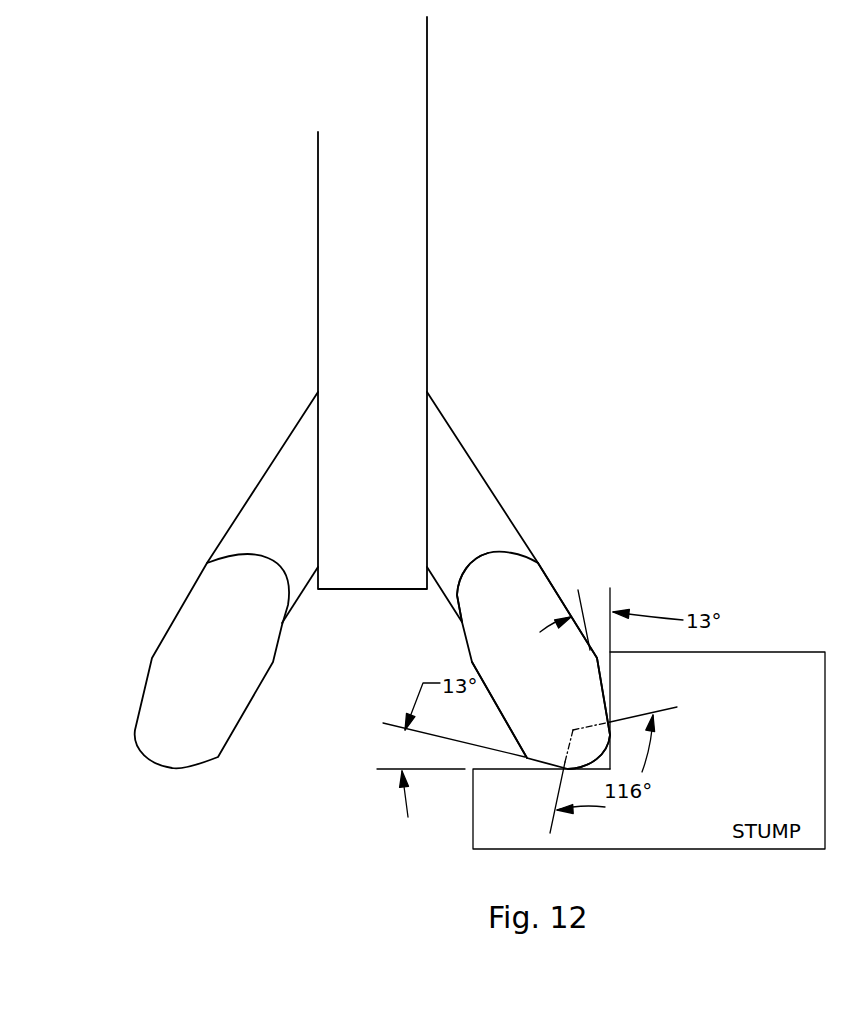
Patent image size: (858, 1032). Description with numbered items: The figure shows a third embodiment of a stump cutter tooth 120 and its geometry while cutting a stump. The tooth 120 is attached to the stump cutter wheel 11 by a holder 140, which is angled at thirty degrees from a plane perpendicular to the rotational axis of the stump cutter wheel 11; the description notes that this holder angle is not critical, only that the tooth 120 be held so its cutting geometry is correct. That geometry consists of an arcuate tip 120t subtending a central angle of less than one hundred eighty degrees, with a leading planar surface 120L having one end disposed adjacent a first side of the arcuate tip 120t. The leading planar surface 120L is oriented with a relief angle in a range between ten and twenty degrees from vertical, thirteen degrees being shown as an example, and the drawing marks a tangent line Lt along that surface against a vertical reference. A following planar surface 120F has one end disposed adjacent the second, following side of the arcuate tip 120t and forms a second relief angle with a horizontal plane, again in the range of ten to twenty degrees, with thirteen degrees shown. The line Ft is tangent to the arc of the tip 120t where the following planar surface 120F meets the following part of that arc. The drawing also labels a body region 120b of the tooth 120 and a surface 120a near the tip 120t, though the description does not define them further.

The stump cutter wheel 11 is at (410, 245).
The holder 140 is at (282, 488).
The stump cutter tooth 120 is at (188, 590).
The tooth body 120b is at (493, 580).
The leading planar surface 120L is at (608, 693).
The tooth tip top surface 120a is at (590, 743).
The tip 120t is at (613, 767).
The following planar surface 120F is at (560, 765).
The line Ft is at (395, 723).
The leading face tangent line Lt is at (590, 590).